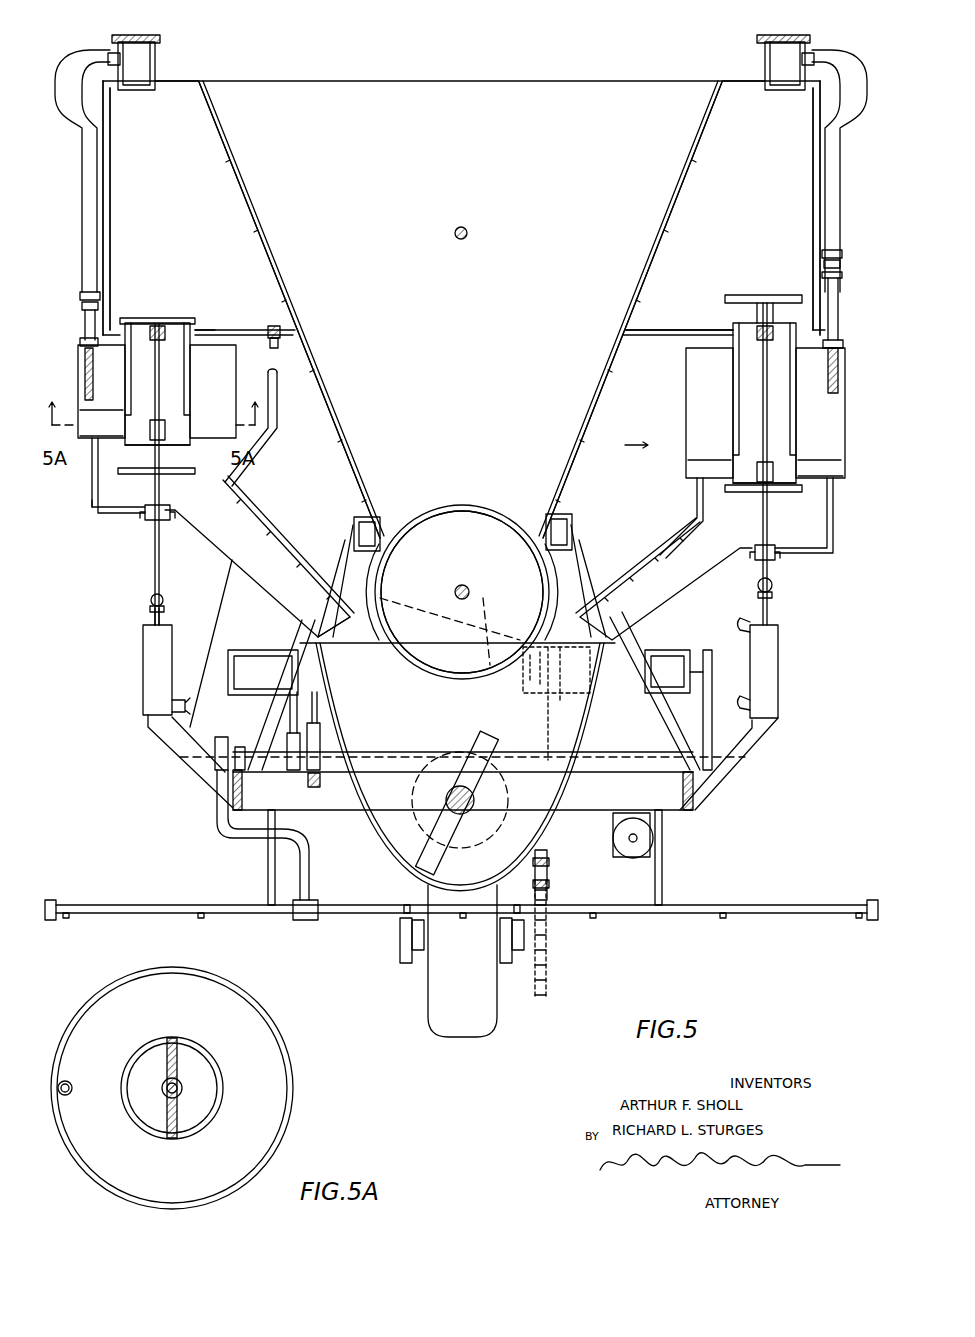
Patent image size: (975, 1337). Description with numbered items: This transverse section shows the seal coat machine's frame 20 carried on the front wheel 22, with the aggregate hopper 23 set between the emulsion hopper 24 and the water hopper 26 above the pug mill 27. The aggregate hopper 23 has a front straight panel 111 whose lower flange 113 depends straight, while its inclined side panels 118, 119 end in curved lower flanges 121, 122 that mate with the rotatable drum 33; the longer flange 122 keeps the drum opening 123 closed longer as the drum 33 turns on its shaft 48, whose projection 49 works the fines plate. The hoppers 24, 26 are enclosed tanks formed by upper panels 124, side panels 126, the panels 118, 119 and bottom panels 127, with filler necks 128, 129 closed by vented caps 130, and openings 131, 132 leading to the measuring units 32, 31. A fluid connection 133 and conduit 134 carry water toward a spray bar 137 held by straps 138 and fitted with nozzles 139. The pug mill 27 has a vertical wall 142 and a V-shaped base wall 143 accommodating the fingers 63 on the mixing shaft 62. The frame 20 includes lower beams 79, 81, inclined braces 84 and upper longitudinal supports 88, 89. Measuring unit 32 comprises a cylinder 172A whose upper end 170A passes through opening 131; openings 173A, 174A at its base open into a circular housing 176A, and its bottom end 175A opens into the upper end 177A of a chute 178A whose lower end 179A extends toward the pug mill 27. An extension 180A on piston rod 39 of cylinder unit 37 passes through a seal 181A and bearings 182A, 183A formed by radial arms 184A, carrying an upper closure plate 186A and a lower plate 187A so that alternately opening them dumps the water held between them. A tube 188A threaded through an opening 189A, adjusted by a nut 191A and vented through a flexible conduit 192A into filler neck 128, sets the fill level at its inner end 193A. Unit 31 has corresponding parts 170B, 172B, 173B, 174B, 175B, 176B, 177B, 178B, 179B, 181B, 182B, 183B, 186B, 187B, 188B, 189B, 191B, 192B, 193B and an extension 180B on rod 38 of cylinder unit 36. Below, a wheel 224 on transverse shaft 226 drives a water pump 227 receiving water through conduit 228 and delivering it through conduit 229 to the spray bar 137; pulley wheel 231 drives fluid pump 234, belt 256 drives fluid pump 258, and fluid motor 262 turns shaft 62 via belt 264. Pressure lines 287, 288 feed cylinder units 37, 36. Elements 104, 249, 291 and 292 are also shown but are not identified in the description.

In FIG. 5, the frame 20 is at (719, 806).
In FIG. 5, the bicycle-type front wheel 22 is at (440, 1010).
In FIG. 5, the first hopper 23 is at (358, 82).
In FIG. 5, the second hopper 24 is at (761, 172).
In FIG. 5, the third hopper 26 is at (178, 172).
In FIG. 5, the pug mill 27 is at (402, 649).
In FIG. 5, the cylindrical measuring unit 31 is at (623, 441).
In FIG. 5, the cylindrical measuring unit 32 is at (78, 509).
In FIG. 5, the open-top rotatable drum 33 is at (490, 507).
In FIG. 5, the hydraulic piston and cylinder unit 36 is at (778, 653).
In FIG. 5, the hydraulic piston and cylinder unit 37 is at (143, 679).
In FIG. 5, the piston rod 38 is at (775, 598).
In FIG. 5, the piston rod 39 is at (152, 620).
In FIG. 5, the shaft 48 is at (458, 588).
In FIG. 5, the projection 49 is at (462, 549).
In FIG. 5, the shaft 62 is at (446, 798).
In FIG. 5, the radially extended fingers 63 is at (482, 742).
In FIG. 5, the longitudinally extended beam 79 is at (238, 798).
In FIG. 5, the longitudinally extended beam 81 is at (693, 812).
In FIG. 5, the inclined braces 84 is at (340, 548).
In FIG. 5, the longitudinal support 88 is at (358, 520).
In FIG. 5, the longitudinal support 89 is at (569, 516).
In FIG. 5, the hopper ball 104 is at (469, 228).
In FIG. 5, the front straight panel 111 is at (452, 171).
In FIG. 5, the lower flange 113 is at (501, 636).
In FIG. 5, the side panel 118 is at (288, 290).
In FIG. 5, the side panel 119 is at (646, 272).
In FIG. 5, the lower flange 121 is at (378, 525).
In FIG. 5, the lower flange 122 is at (560, 582).
In FIG. 5, the drum opening 123 is at (457, 658).
In FIG. 5, the upper panels 124 is at (180, 80).
In FIG. 5, the side panels 126 is at (112, 145).
In FIG. 5, the bottom panels 127 is at (236, 330).
In FIG. 5, the filler neck 128 is at (158, 58).
In FIG. 5, the filler neck 129 is at (765, 60).
In FIG. 5, the vented caps 130 is at (124, 34).
In FIG. 5, the opening 131 is at (208, 326).
In FIG. 5, the opening 132 is at (735, 330).
In FIG. 5, the fluid connection 133 is at (281, 326).
In FIG. 5, the conduit 134 is at (280, 343).
In FIG. 5, the spray bar 137 is at (255, 918).
In FIG. 5, the straps 138 is at (266, 876).
In FIG. 5, the nozzles 139 is at (198, 915).
In FIG. 5, the straight vertical wall 142 is at (432, 719).
In FIG. 5, the base wall 143 is at (338, 712).
In FIG. 5, the upper end 170A is at (112, 320).
In FIG. 5, the upper end 170B is at (820, 318).
In FIG. 5, the cylinder 172A is at (178, 385).
In FIG. 5A, the cylinder 172A is at (160, 1038).
In FIG. 5, the cylinder 172B is at (733, 384).
In FIG. 5, the opening 173A is at (124, 428).
In FIG. 5A, the opening 173A is at (110, 1100).
In FIG. 5, the opening 173B is at (741, 462).
In FIG. 5, the opening 174A is at (182, 428).
In FIG. 5A, the opening 174A is at (220, 1110).
In FIG. 5, the opening 174B is at (786, 456).
In FIG. 5, the bottom open end 175A is at (145, 447).
In FIG. 5, the bottom open end 175B is at (722, 486).
In FIG. 5, the circular housing 176A is at (236, 391).
In FIG. 5A, the circular housing 176A is at (283, 1032).
In FIG. 5, the circular housing 176B is at (686, 414).
In FIG. 5, the upper end 177A is at (92, 496).
In FIG. 5, the upper end 177B is at (697, 514).
In FIG. 5, the chute 178A is at (266, 518).
In FIG. 5, the chute 178B is at (680, 592).
In FIG. 5, the lower end 179A is at (340, 632).
In FIG. 5, the lower end 179B is at (640, 628).
In FIG. 5, the extension 180A is at (155, 550).
In FIG. 5A, the extension 180A is at (168, 1093).
In FIG. 5, the extension 180B is at (772, 555).
In FIG. 5, the seal 181A is at (145, 515).
In FIG. 5, the seal 181B is at (750, 548).
In FIG. 5, the bearing 182A is at (168, 440).
In FIG. 5A, the bearing 182A is at (182, 1088).
In FIG. 5, the bearing 182B is at (774, 484).
In FIG. 5, the bearing 183A is at (168, 330).
In FIG. 5, the bearing 183B is at (755, 336).
In FIG. 5A, the radial arms 184A is at (180, 1060).
In FIG. 5, the closure plate 186A is at (160, 318).
In FIG. 5, the closure plate 186B is at (752, 295).
In FIG. 5, the closure plate 187A is at (170, 476).
In FIG. 5, the closure plate 187B is at (752, 492).
In FIG. 5, the tube 188A is at (78, 370).
In FIG. 5A, the tube 188A is at (62, 1070).
In FIG. 5, the tube 188B is at (834, 385).
In FIG. 5, the opening 189A is at (93, 360).
In FIG. 5, the opening 189B is at (828, 360).
In FIG. 5, the nut 191A is at (80, 342).
In FIG. 5, the nut 191B is at (843, 340).
In FIG. 5, the flexible conduit 192A is at (82, 228).
In FIG. 5, the flexible conduit 192B is at (825, 203).
In FIG. 5, the inner end 193A is at (70, 400).
In FIG. 5, the inner end 193B is at (836, 400).
In FIG. 5, the wheel 224 is at (332, 745).
In FIG. 5, the transverse shaft 226 is at (343, 755).
In FIG. 5, the water pump 227 is at (195, 770).
In FIG. 5, the conduit 228 is at (222, 583).
In FIG. 5, the conduit 229 is at (228, 840).
In FIG. 5, the pulley wheel 231 is at (285, 772).
In FIG. 5, the fluid pump 234 is at (262, 685).
In FIG. 5, the drive chain 249 is at (549, 985).
In FIG. 5, the belt 256 is at (703, 720).
In FIG. 5, the fluid pump 258 is at (680, 650).
In FIG. 5, the fluid motor 262 is at (640, 858).
In FIG. 5, the belt 264 is at (549, 870).
In FIG. 5, the line 287 is at (200, 608).
In FIG. 5, the line 288 is at (752, 702).
In FIG. 5, the cylinder fitting 291 is at (170, 703).
In FIG. 5, the upper hook 292 is at (752, 620).